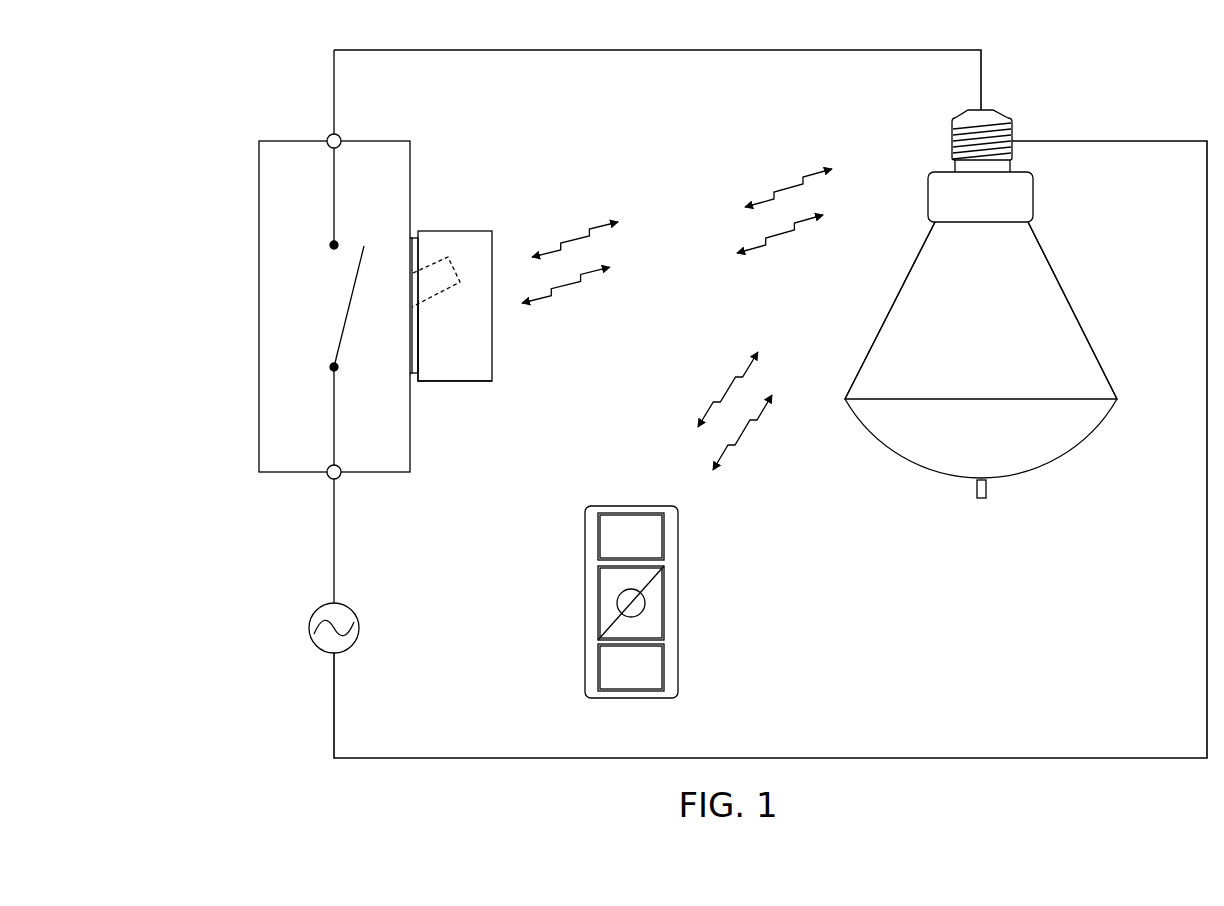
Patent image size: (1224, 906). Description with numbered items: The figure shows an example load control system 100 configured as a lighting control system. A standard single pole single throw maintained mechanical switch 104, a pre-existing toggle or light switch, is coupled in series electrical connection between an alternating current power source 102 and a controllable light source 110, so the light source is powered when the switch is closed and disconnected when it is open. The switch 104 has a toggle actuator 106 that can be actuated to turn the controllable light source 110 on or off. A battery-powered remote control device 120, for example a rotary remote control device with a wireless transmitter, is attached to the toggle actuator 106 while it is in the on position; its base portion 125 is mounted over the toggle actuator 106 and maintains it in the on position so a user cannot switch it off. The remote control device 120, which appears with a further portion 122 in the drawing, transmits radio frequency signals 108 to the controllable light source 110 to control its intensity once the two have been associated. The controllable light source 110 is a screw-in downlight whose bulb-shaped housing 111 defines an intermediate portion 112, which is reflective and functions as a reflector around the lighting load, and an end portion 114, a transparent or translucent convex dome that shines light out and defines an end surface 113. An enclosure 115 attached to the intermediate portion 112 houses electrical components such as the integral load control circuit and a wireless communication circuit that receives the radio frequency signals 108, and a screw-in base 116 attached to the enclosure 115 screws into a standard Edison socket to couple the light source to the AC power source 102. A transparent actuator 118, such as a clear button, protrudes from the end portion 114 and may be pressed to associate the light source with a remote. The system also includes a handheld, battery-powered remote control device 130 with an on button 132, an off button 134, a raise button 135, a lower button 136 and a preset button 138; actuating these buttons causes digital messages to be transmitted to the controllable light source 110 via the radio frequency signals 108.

The load control system 100 is at (213, 60).
The alternating current (AC) power source 102 is at (358, 605).
The maintained mechanical switch 104 is at (388, 203).
The toggle actuator 106 is at (452, 271).
The radio frequency (RF) signals 108 is at (593, 268).
The controllable light source 110 is at (905, 270).
The housing 111 is at (867, 357).
The intermediate portion 112 is at (1072, 328).
The end surface 113 is at (912, 447).
The end portion 114 is at (1062, 447).
The enclosure 115 is at (1003, 205).
The screw-in base 116 is at (985, 133).
The transparent actuator 118 is at (986, 492).
The remote control device 120 is at (492, 330).
The controller housing 122 is at (463, 370).
The base portion 125 is at (414, 380).
The remote control device 130 is at (641, 565).
The on button 132 is at (634, 529).
The off button 134 is at (642, 668).
The raise button 135 is at (613, 583).
The lower button 136 is at (643, 620).
The preset button 138 is at (633, 602).